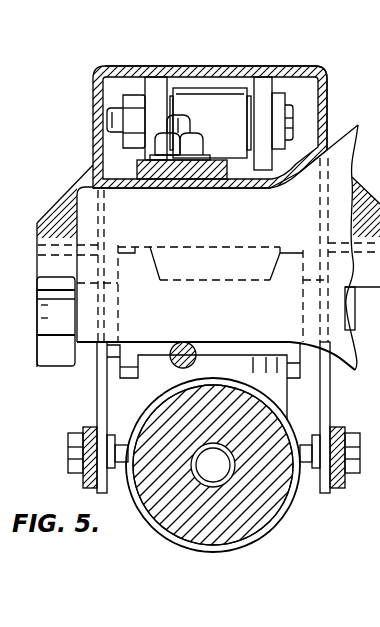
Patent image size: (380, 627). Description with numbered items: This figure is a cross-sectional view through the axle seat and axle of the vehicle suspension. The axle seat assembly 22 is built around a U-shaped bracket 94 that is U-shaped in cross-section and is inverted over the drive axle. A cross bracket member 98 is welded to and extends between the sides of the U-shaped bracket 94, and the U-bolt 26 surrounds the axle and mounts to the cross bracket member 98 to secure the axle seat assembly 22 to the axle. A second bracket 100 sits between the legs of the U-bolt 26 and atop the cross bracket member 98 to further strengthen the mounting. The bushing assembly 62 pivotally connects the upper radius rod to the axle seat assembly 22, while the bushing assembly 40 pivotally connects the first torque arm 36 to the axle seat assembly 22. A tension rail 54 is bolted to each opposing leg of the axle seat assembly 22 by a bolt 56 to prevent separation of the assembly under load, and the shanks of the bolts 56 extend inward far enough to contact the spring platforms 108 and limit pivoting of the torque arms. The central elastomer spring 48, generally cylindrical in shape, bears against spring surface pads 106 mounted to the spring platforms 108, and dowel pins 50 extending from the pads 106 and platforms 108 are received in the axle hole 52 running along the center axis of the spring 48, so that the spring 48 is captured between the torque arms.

The axle seat assembly 22 is at (248, 60).
The U-shaped bracket 94 is at (318, 71).
The bushing assembly 62 is at (198, 99).
The second bracket 100 is at (212, 188).
The cross bracket member 98 is at (251, 187).
The first torque arm 36 is at (263, 238).
The bushing assembly 40 is at (40, 363).
The U-bolt 26 is at (190, 338).
The spring platform 108 is at (237, 355).
The tension rail 54 is at (85, 428).
The bolt 56 is at (68, 462).
The dowel pin 50 is at (144, 520).
The central elastomer spring 48 is at (282, 520).
The axle hole 52 is at (196, 551).
The spring surface pad 106 is at (167, 373).